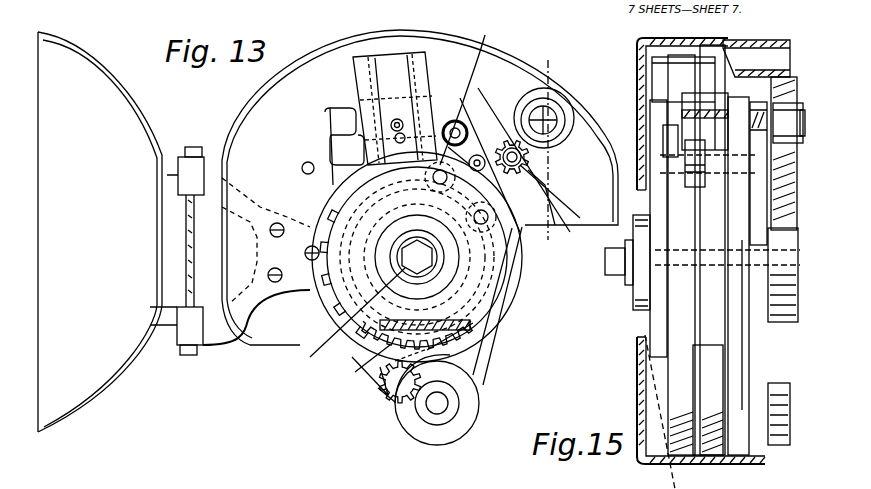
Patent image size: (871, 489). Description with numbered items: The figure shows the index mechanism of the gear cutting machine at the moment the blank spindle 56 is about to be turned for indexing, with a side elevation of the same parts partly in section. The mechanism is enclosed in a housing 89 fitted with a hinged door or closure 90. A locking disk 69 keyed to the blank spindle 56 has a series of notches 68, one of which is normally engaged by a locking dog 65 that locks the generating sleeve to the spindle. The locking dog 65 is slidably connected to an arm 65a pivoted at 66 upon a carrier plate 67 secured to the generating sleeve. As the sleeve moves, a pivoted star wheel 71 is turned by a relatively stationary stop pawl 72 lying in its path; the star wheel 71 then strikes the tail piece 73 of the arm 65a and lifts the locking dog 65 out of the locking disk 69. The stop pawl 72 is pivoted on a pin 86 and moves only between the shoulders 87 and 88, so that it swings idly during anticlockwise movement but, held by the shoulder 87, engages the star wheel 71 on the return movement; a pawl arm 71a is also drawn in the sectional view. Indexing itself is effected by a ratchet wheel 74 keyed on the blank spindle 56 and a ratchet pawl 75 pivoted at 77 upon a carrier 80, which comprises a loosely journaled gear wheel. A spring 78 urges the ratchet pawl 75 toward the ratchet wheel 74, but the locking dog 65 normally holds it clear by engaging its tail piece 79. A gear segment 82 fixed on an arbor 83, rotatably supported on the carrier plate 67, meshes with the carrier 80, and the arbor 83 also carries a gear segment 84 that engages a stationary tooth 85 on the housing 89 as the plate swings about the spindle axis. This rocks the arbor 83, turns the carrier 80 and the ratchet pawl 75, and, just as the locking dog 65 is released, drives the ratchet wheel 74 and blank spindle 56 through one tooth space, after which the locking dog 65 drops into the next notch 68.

In FIG. 13, the blank spindle 56 is at (277, 259).
In FIG. 13, the locking dog 65 is at (405, 85).
In FIG. 13, the arm 65a is at (473, 89).
In FIG. 13, the pivot 66 is at (460, 120).
In FIG. 13, the carrier plate 67 is at (482, 120).
In FIG. 15, the carrier plate 67 is at (735, 340).
In FIG. 13, the notches 68 is at (480, 341).
In FIG. 15, the notches 68 is at (655, 300).
In FIG. 13, the locking disk 69 is at (484, 208).
In FIG. 15, the locking disk 69 is at (655, 312).
In FIG. 13, the star wheel 71 is at (528, 170).
In FIG. 15, the star wheel 71 is at (703, 136).
In FIG. 15, the pawl arm 71a is at (774, 212).
In FIG. 13, the pawl 72 is at (533, 143).
In FIG. 13, the tail piece 73 is at (498, 150).
In FIG. 13, the ratchet wheel 74 is at (350, 300).
In FIG. 13, the ratchet pawl 75 is at (487, 273).
In FIG. 15, the ratchet pawl 75 is at (680, 272).
In FIG. 13, the pivot 77 is at (507, 220).
In FIG. 15, the pivot 77 is at (686, 245).
In FIG. 13, the spring 78 is at (359, 367).
In FIG. 13, the tail piece 79 is at (417, 238).
In FIG. 13, the carrier 80 is at (470, 332).
In FIG. 13, the gear segment 82 is at (447, 372).
In FIG. 15, the gear segment 82 is at (707, 392).
In FIG. 13, the arbor 83 is at (440, 403).
In FIG. 13, the gear segment 84 is at (398, 418).
In FIG. 15, the gear segment 84 is at (755, 383).
In FIG. 13, the stationary tooth 85 is at (386, 398).
In FIG. 13, the pin 86 is at (552, 108).
In FIG. 15, the pin 86 is at (756, 58).
In FIG. 13, the shoulder 87 is at (558, 118).
In FIG. 15, the shoulder 87 is at (758, 112).
In FIG. 13, the shoulder 88 is at (545, 100).
In FIG. 13, the housing 89 is at (410, 187).
In FIG. 13, the hinged door 90 is at (100, 232).
In FIG. 15, the hinged door 90 is at (639, 386).